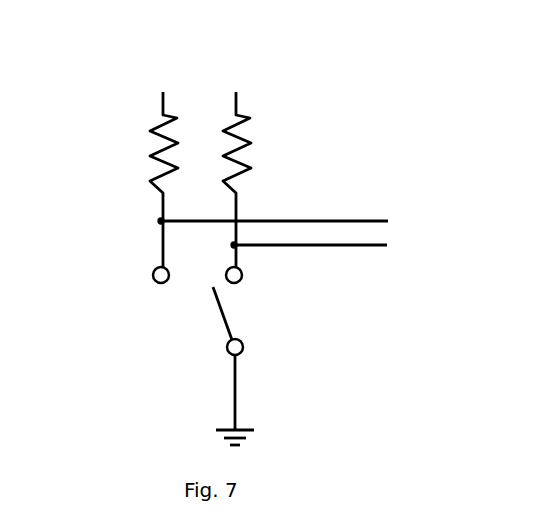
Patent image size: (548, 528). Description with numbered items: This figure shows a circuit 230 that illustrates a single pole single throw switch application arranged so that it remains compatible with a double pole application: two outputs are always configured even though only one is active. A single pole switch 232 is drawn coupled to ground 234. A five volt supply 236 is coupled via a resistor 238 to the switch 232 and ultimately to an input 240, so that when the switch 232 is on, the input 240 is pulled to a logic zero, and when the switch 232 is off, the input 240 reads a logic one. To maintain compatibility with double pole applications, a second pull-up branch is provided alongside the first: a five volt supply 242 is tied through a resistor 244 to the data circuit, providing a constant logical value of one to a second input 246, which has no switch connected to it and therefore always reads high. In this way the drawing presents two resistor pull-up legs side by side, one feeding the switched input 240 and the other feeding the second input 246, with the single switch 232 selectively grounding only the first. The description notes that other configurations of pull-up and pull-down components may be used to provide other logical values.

The circuit 230 is at (401, 117).
The single pole switch 232 is at (218, 307).
The ground 234 is at (223, 427).
The +5 V supply 236 is at (239, 67).
The resistor 238 is at (250, 135).
The input 240 is at (372, 248).
The +5V supply 242 is at (168, 62).
The pull-up resistor 244 is at (160, 140).
The second input 246 is at (370, 218).